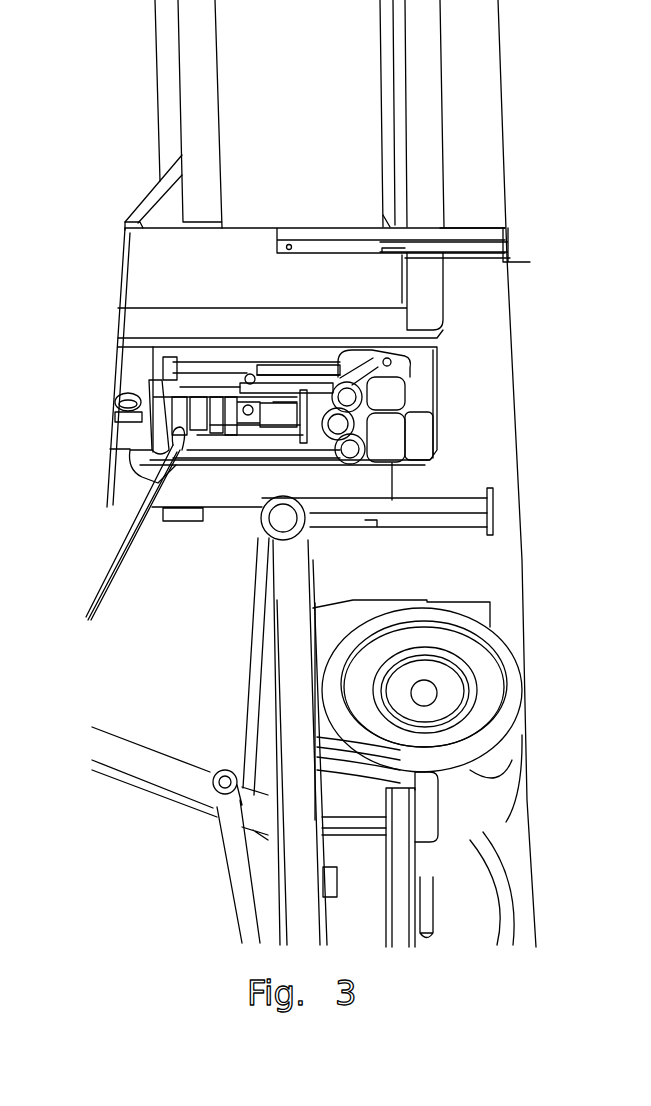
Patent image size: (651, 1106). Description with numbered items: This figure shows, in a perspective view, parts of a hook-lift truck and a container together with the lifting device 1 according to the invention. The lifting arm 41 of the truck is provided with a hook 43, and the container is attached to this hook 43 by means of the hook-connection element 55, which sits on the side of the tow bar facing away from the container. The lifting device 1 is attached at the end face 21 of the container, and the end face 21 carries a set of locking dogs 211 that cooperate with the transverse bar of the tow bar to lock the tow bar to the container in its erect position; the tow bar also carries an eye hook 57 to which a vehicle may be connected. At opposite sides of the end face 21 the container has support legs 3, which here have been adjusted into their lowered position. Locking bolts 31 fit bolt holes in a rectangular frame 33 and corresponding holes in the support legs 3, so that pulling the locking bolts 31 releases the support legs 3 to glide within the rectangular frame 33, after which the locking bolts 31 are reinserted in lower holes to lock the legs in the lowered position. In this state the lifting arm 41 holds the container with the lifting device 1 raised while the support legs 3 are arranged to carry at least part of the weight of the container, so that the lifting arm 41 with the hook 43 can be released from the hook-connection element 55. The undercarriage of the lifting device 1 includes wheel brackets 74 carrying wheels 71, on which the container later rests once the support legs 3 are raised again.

The lifting device 1 is at (245, 468).
The support legs 3 is at (457, 227).
The end face 21 is at (218, 262).
The locking bolts 31 is at (510, 258).
The rectangular frame 33 is at (381, 220).
The lifting arm 41 is at (97, 525).
The hook 43 is at (110, 452).
The hook-connection element 55 is at (158, 383).
The eye hook 57 is at (107, 400).
The wheels 71 is at (410, 378).
The wheel brackets 74 is at (410, 370).
The locking dogs 211 is at (160, 403).